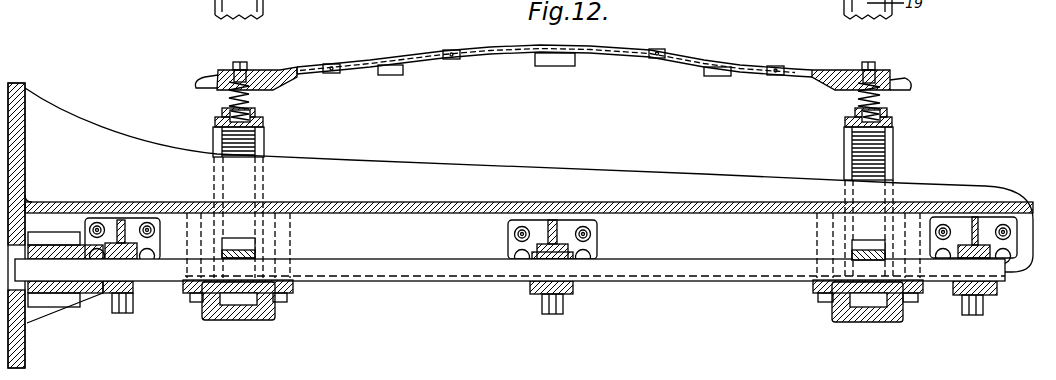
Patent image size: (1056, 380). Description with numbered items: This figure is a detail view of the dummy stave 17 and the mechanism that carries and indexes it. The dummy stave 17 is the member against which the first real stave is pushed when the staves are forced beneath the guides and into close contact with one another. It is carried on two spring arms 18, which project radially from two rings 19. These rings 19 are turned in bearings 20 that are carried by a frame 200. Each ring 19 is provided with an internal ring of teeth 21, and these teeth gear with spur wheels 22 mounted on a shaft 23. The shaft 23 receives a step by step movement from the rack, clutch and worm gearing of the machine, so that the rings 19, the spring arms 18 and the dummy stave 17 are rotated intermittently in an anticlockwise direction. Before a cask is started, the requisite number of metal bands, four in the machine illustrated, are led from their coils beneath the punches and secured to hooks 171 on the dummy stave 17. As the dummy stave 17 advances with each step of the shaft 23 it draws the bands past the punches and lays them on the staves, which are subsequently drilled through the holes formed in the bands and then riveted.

The dummy stave 17 is at (585, 55).
The hooks 171 is at (336, 73).
The spring arms 18 is at (230, 93).
The rings 19 is at (263, 121).
The bearings 20 is at (203, 302).
The internal rings of teeth 21 is at (232, 134).
The spur wheels 22 is at (247, 243).
The shaft 23 is at (942, 280).
The frame 200 is at (504, 203).